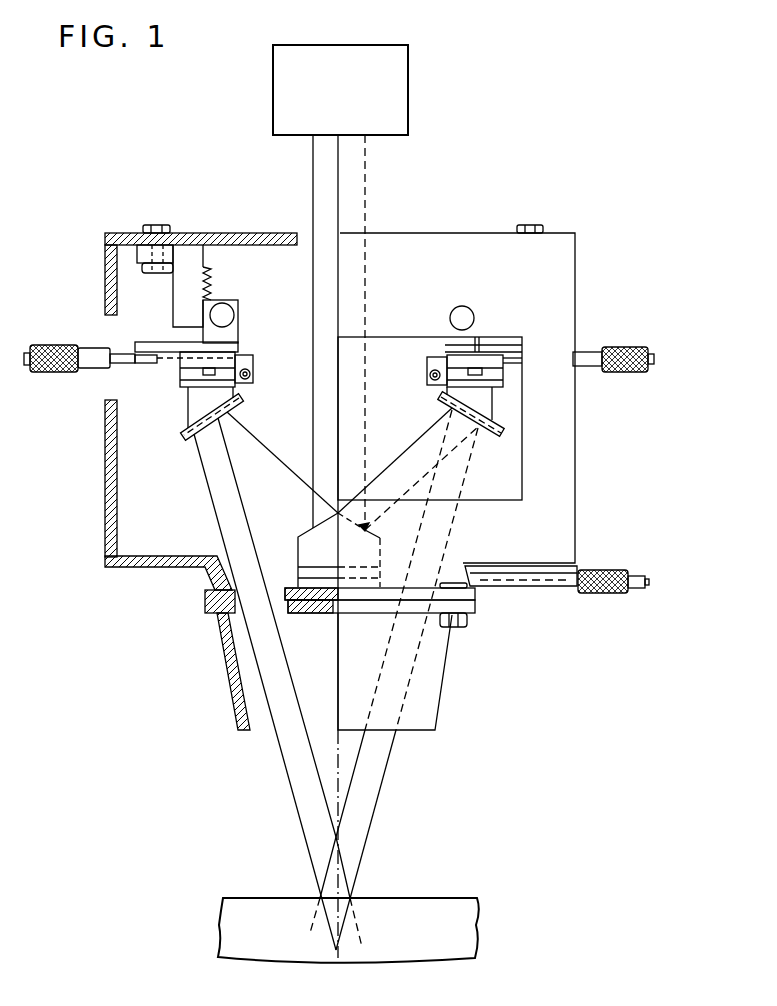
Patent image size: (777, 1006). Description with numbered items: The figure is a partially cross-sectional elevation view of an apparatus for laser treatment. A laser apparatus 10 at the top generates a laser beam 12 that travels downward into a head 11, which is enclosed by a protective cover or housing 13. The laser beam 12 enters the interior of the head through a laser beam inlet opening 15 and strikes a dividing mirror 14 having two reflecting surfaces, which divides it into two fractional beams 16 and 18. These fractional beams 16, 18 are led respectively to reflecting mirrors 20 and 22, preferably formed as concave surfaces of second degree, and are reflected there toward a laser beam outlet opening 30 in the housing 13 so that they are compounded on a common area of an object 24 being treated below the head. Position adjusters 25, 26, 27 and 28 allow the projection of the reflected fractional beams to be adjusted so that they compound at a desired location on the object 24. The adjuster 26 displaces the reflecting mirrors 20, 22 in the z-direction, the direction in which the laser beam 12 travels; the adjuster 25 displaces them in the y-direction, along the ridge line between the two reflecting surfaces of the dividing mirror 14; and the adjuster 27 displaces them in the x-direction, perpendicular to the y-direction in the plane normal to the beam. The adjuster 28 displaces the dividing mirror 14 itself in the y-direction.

The laser apparatus 10 is at (408, 104).
The head 11 is at (229, 199).
The laser beam 12 is at (367, 200).
The protective cover or housing 13 is at (116, 569).
The dividing mirror 14 is at (302, 552).
The laser beam inlet opening 15 is at (297, 243).
The fractional beam 16 is at (406, 462).
The fractional beam 18 is at (265, 467).
The reflecting mirror 20 is at (500, 432).
The reflecting mirror 22 is at (184, 438).
The object being treated 24 is at (478, 925).
The reflecting mirror position adjuster 25 is at (54, 372).
The reflecting mirror position adjuster 26 is at (234, 316).
The reflecting mirror position adjuster 27 is at (251, 372).
The dividing mirror position adjuster 28 is at (603, 597).
The laser beam outlet opening 30 is at (287, 610).